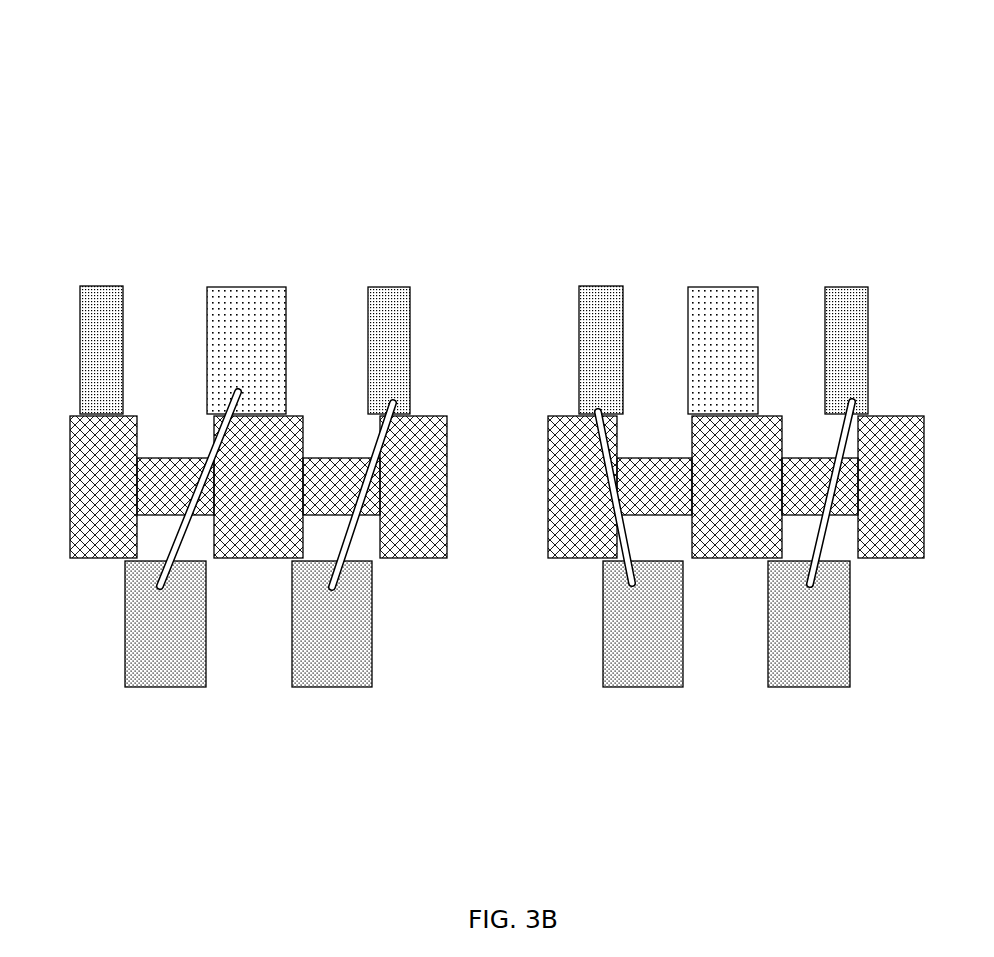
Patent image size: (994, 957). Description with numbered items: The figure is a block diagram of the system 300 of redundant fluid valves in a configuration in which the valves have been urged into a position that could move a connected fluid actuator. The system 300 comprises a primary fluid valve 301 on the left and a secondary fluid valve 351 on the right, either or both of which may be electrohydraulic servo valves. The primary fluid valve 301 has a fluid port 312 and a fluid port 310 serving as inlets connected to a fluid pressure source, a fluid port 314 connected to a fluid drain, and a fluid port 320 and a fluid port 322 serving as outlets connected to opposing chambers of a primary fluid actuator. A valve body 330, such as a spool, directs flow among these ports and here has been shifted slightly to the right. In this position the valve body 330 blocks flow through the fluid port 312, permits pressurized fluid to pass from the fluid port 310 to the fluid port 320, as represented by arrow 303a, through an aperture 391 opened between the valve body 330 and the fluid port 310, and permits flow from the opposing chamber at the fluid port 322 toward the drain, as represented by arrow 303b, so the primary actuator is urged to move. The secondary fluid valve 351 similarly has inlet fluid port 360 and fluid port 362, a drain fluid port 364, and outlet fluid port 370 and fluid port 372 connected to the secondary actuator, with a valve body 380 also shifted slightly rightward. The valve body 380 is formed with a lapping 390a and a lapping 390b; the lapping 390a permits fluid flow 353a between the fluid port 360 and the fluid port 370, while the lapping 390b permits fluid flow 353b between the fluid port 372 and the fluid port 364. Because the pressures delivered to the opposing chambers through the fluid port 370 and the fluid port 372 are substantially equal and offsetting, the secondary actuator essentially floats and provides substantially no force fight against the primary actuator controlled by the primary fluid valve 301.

The system 300 is at (136, 55).
The primary fluid valve 301 is at (85, 218).
The secondary fluid valve 351 is at (562, 218).
The fluid port 312 is at (80, 286).
The fluid port 314 is at (286, 287).
The fluid port 310 is at (410, 287).
The valve body 330 is at (68, 406).
The aperture 391 is at (371, 422).
The arrow 303b is at (160, 558).
The arrow 303a is at (356, 528).
The fluid port 322 is at (125, 686).
The fluid port 320 is at (372, 686).
The fluid port 362 is at (579, 286).
The fluid port 364 is at (758, 287).
The fluid port 360 is at (868, 287).
The valve body 380 is at (566, 406).
The lapping 390b is at (610, 417).
The lapping 390a is at (838, 423).
The arrow 353b is at (616, 532).
The arrow 353a is at (825, 527).
The fluid port 372 is at (603, 686).
The fluid port 370 is at (850, 686).